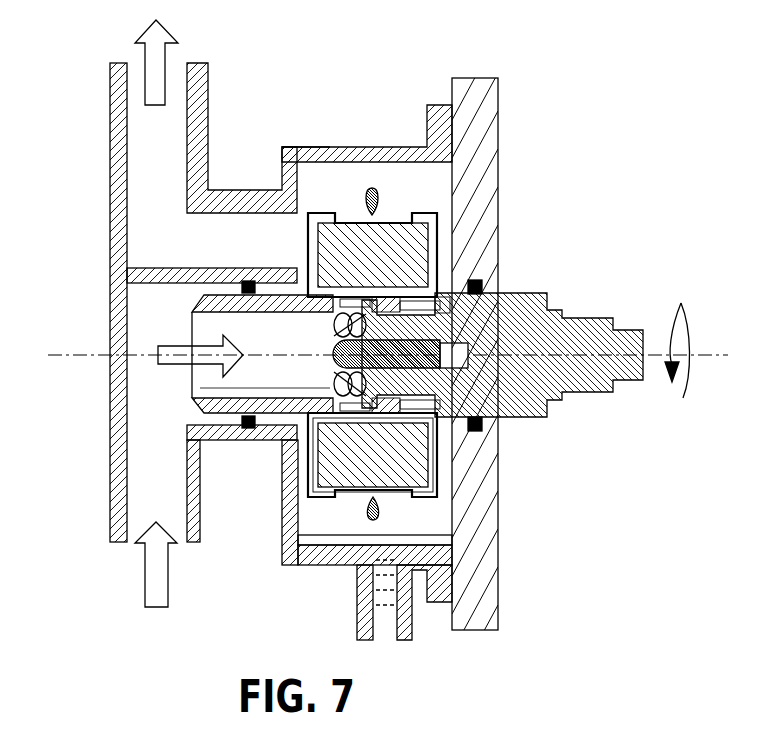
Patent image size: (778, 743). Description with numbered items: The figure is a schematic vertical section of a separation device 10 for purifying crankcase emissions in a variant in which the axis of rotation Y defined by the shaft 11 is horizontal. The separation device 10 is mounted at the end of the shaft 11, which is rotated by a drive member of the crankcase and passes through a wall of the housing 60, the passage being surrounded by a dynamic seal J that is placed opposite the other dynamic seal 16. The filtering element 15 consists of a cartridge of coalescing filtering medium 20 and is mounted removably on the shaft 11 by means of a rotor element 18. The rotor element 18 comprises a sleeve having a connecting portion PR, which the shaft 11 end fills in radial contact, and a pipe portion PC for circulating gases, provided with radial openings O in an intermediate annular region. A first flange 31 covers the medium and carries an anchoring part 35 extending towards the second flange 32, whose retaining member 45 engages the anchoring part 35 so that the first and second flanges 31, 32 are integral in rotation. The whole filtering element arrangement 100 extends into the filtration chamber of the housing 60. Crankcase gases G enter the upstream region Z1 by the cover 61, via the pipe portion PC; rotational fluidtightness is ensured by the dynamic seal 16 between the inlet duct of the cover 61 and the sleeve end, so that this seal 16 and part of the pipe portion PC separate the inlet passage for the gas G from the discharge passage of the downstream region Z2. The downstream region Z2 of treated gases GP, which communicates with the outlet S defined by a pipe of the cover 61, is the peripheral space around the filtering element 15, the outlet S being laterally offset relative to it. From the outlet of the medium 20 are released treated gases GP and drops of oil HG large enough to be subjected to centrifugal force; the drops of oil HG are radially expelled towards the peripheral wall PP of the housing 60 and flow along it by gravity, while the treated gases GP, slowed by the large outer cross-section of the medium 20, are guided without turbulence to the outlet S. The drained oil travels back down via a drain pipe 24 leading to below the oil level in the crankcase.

The separation device 10 is at (381, 374).
The shaft 11 is at (590, 318).
The filtering element 15 is at (339, 193).
The dynamic seal 16 is at (248, 428).
The rotor element 18 is at (192, 311).
The filtering medium 20 is at (352, 222).
The drain pipe 24 is at (405, 610).
The first flange 31 is at (397, 483).
The second flange 32 is at (433, 470).
The anchoring part 35 is at (388, 297).
The retaining member 45 is at (405, 440).
The housing 60 is at (314, 145).
The cover 61 is at (110, 450).
The filtering element arrangement 100 is at (441, 212).
The treated gases GP is at (143, 57).
The untreated gases G is at (143, 583).
The outlet S is at (220, 237).
The peripheral wall PP is at (369, 145).
The downstream region Z2 is at (150, 240).
The upstream region Z1 is at (158, 468).
The pipe portion PC is at (192, 392).
The radial openings O is at (335, 323).
The connecting portion PR is at (437, 298).
The dynamic seal J is at (482, 283).
The drops of oil HG is at (367, 522).
The axis of rotation Y is at (707, 350).